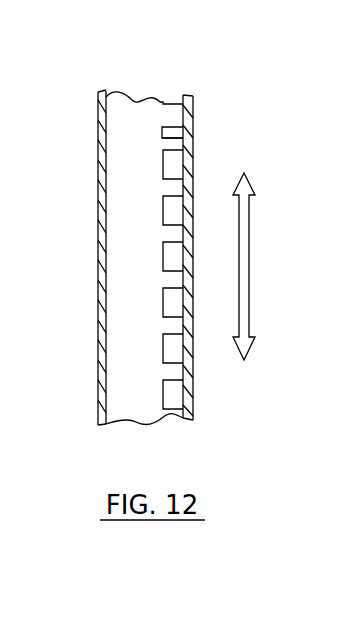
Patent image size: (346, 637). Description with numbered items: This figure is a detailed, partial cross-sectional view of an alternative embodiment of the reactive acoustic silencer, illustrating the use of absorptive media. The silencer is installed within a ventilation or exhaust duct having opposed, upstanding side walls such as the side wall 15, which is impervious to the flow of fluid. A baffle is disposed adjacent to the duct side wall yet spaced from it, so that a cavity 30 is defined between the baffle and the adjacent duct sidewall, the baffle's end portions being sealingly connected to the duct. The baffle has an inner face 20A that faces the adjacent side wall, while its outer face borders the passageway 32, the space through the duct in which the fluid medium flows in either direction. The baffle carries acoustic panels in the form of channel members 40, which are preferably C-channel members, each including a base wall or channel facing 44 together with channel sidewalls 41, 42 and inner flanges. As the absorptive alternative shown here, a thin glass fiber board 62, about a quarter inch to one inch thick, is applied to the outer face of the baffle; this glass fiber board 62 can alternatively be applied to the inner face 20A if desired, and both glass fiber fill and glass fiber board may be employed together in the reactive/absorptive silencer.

The side wall 15 is at (97, 206).
The inner face 20A is at (150, 355).
The cavity 30 is at (116, 303).
The passageway 32 is at (250, 288).
The channel member 40 is at (184, 139).
The channel sidewall 41 is at (172, 191).
The channel sidewall 42 is at (168, 238).
The channel facing 44 is at (183, 108).
The glass fiber board 62 is at (185, 131).